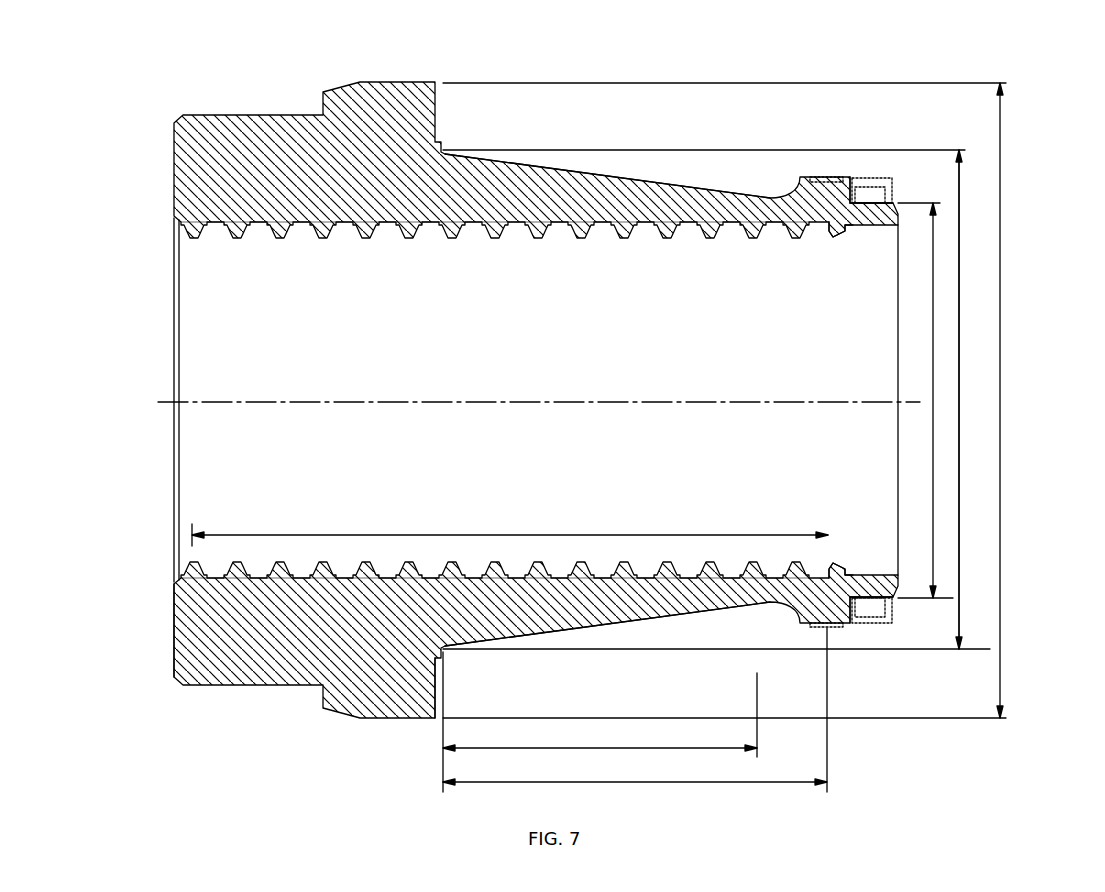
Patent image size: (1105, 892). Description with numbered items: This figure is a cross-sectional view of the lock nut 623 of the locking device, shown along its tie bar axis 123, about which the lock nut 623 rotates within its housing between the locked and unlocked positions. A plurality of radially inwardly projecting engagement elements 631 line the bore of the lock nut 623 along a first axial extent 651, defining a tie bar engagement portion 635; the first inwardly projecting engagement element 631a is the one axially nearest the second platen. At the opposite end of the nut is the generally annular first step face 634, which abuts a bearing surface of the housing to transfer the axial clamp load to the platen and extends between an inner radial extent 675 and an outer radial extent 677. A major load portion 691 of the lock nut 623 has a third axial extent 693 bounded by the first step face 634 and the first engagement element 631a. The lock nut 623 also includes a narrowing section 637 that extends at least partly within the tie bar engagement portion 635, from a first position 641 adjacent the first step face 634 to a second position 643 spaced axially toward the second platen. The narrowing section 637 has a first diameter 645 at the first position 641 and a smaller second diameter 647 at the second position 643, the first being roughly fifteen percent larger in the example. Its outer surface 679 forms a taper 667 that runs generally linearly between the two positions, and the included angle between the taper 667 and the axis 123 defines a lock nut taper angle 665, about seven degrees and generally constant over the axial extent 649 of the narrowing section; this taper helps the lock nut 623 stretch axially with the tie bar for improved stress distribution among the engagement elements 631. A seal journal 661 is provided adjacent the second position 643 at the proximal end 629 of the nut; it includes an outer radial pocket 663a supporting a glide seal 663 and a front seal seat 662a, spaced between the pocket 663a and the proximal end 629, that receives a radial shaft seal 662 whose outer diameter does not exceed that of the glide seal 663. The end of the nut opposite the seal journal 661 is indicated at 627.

The lock nut 623 is at (120, 152).
The tie bar axis 123 is at (197, 402).
The proximal end 629 is at (898, 290).
The first step face 634 is at (437, 124).
The tapered outer surface 679 is at (452, 153).
The radially inwardly projecting engagement elements 631 is at (237, 226).
The first inwardly projecting engagement element 631a is at (838, 240).
The tie bar engagement portion 635 is at (516, 546).
The first axial extent 651 is at (415, 535).
The outer radial pocket 663a is at (817, 177).
The glide seal 663 is at (856, 158).
The seal journal 661 is at (856, 161).
The radial shaft seal 662 is at (890, 166).
The front seal seat 662a is at (873, 201).
The second diameter 647 is at (934, 345).
The first diameter 645 is at (960, 452).
The inner radial extent 675 is at (1015, 399).
The outer radial extent 677 is at (1001, 528).
The inlet end 627 is at (176, 598).
The first position 641 is at (441, 726).
The lock nut taper angle 665 is at (519, 611).
The narrowing section 637 is at (612, 637).
The taper 667 is at (633, 619).
The major load portion 691 is at (747, 622).
The second position 643 is at (758, 701).
The axial extent of the narrowing section 649 is at (553, 749).
The third axial extent 693 is at (630, 781).